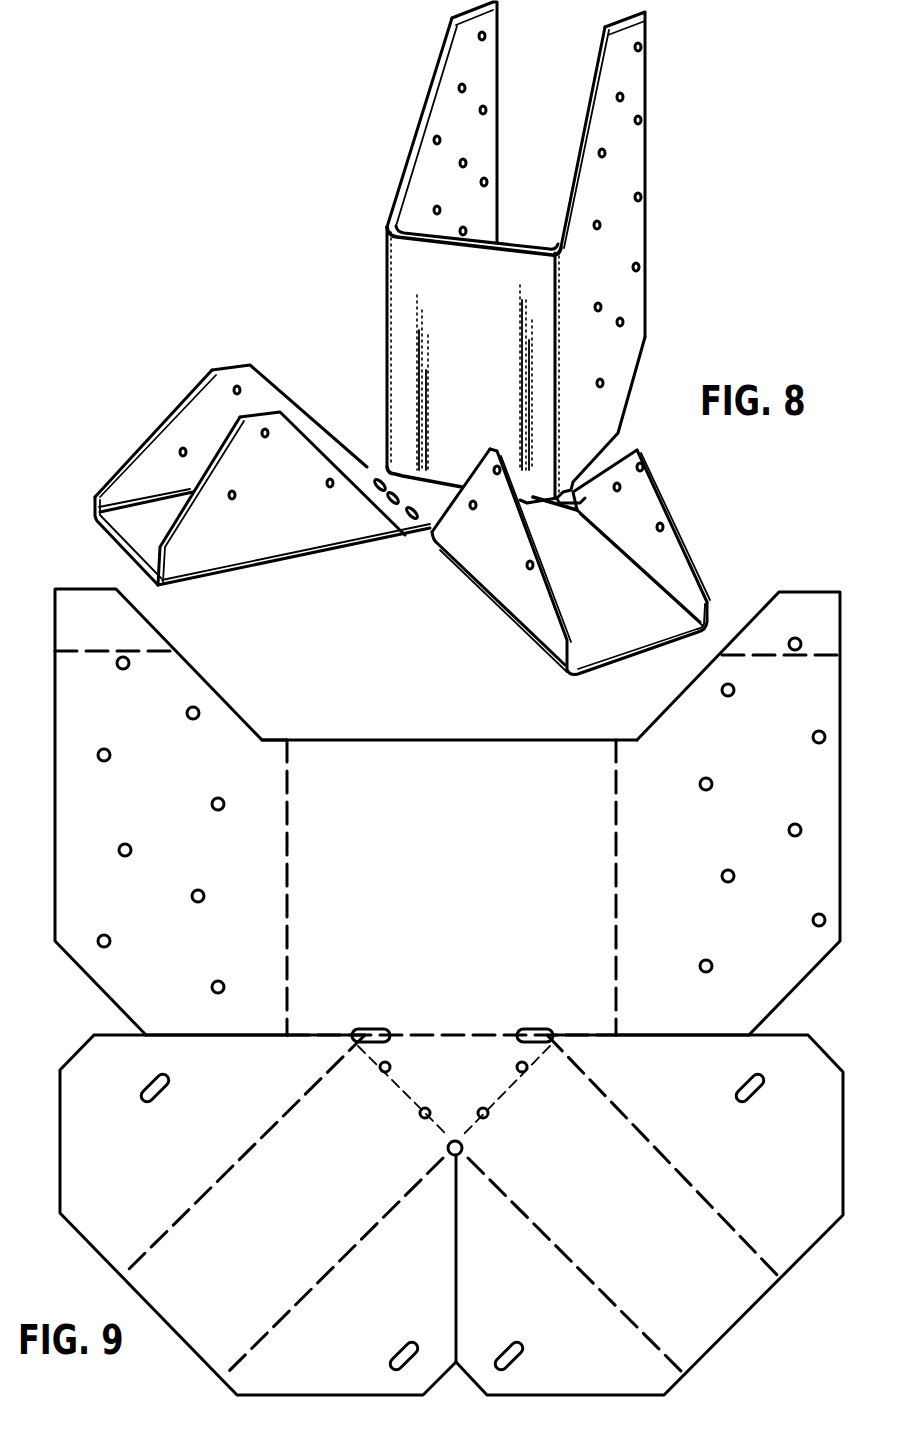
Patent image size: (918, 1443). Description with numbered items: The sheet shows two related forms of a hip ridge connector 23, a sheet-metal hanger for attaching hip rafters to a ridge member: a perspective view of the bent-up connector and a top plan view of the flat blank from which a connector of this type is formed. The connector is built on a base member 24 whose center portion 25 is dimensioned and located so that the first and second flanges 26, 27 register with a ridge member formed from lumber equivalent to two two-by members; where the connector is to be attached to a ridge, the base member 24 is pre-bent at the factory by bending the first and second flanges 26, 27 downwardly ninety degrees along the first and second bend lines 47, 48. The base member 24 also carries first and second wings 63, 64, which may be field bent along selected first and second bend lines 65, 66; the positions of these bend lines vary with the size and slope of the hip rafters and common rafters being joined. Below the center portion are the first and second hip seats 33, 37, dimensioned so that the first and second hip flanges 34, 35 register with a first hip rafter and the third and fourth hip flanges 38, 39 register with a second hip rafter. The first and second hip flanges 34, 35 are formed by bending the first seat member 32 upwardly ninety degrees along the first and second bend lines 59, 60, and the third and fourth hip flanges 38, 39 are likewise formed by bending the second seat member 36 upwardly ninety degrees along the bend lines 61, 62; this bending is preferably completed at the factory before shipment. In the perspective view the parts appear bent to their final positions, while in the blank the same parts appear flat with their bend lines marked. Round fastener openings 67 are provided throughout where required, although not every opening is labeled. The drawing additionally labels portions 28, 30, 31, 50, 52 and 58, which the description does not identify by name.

In FIG. 8, the hip ridge connector 23 is at (690, 178).
In FIG. 9, the hip ridge connector 23 is at (55, 995).
In FIG. 8, the base member 24 is at (657, 136).
In FIG. 9, the base member 24 is at (431, 738).
In FIG. 8, the center portion 25 is at (487, 357).
In FIG. 9, the center portion 25 is at (469, 887).
In FIG. 8, the first flange 26 is at (454, 197).
In FIG. 9, the first flange 26 is at (183, 825).
In FIG. 8, the second flange 27 is at (614, 267).
In FIG. 9, the second flange 27 is at (729, 849).
In FIG. 8, the connecting tab / seat plate 28 is at (430, 495).
In FIG. 9, the connecting tab / seat plate 28 is at (465, 1075).
In FIG. 9, the left 45-degree fold line 30 is at (365, 1052).
In FIG. 9, the right 45-degree fold line 31 is at (545, 1052).
In FIG. 8, the first seat member 32 is at (88, 503).
In FIG. 9, the first seat member 32 is at (57, 1196).
In FIG. 8, the first hip seat 33 is at (152, 543).
In FIG. 9, the first hip seat 33 is at (301, 1233).
In FIG. 8, the first hip flange 34 is at (219, 433).
In FIG. 9, the first hip flange 34 is at (185, 1157).
In FIG. 8, the second hip flange 35 is at (296, 540).
In FIG. 9, the second hip flange 35 is at (407, 1321).
In FIG. 8, the second seat member 36 is at (571, 562).
In FIG. 9, the second seat member 36 is at (840, 1236).
In FIG. 8, the second hip seat 37 is at (622, 617).
In FIG. 9, the second hip seat 37 is at (631, 1227).
In FIG. 8, the third hip flange 38 is at (507, 546).
In FIG. 9, the third hip flange 38 is at (509, 1319).
In FIG. 8, the fourth hip flange 39 is at (639, 524).
In FIG. 9, the fourth hip flange 39 is at (774, 1159).
In FIG. 9, the first bend line 47 is at (289, 819).
In FIG. 9, the second bend line 48 is at (616, 791).
In FIG. 9, the left upright fold line 50 is at (445, 1137).
In FIG. 9, the right upright fold line 52 is at (466, 1137).
In FIG. 9, the elongated fastener slot 58 is at (142, 1084).
In FIG. 9, the first bend line 59 is at (146, 1248).
In FIG. 9, the second bend line 60 is at (252, 1346).
In FIG. 9, the bend line 61 is at (652, 1342).
In FIG. 9, the bend line 62 is at (736, 1234).
In FIG. 8, the first wing 63 is at (479, 77).
In FIG. 9, the first wing 63 is at (114, 716).
In FIG. 8, the second wing 64 is at (634, 83).
In FIG. 9, the second wing 64 is at (796, 721).
In FIG. 9, the first bend line 65 is at (146, 650).
In FIG. 9, the second bend line 66 is at (756, 655).
In FIG. 8, the round fastener openings 67 is at (466, 163).
In FIG. 9, the round fastener openings 67 is at (213, 982).